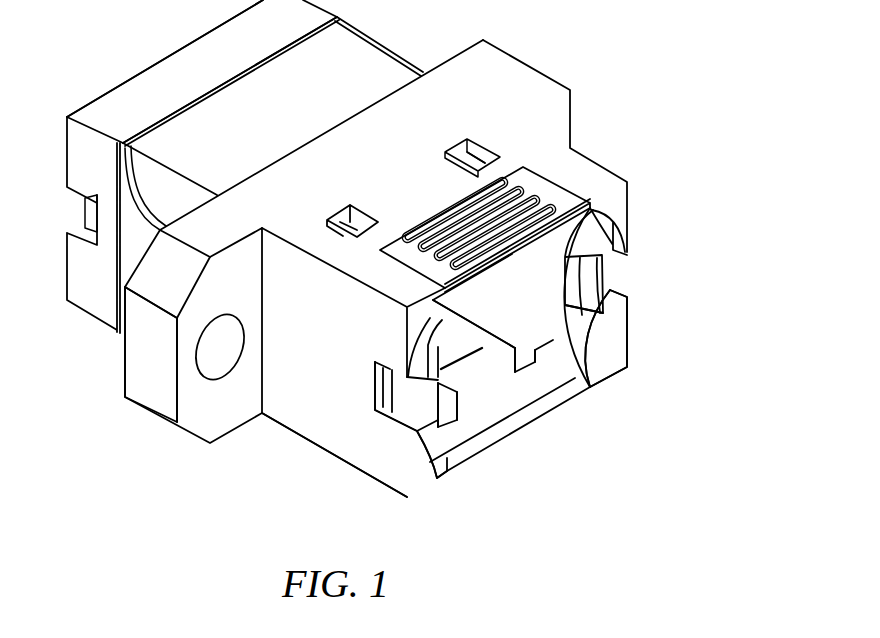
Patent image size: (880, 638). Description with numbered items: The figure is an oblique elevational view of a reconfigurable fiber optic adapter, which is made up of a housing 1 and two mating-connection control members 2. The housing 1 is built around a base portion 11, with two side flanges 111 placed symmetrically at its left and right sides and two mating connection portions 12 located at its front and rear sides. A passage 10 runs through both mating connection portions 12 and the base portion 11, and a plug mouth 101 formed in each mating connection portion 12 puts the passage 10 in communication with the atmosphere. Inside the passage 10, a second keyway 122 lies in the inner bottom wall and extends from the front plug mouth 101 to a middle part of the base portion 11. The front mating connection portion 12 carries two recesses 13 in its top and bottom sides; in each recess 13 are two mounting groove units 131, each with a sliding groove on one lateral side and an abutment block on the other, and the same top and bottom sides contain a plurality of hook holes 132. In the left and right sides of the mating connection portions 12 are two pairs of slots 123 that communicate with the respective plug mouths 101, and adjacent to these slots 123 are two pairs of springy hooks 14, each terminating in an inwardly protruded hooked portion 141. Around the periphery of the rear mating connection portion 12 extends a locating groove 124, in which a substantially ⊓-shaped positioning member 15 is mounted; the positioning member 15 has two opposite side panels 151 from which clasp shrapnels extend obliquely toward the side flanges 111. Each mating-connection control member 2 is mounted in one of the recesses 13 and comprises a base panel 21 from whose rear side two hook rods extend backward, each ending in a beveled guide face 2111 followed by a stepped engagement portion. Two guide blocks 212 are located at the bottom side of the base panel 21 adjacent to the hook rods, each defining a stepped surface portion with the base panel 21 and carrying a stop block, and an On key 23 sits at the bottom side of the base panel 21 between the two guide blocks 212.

The housing 1 is at (343, 477).
The mating-connection control member 2 is at (648, 155).
The passage 10 is at (493, 333).
The base portion 11 is at (388, 102).
The mating connection portion 12 is at (338, 442).
The recess 13 is at (576, 466).
The springy hook 14 is at (545, 268).
The positioning member 15 is at (205, 101).
The base panel 21 is at (544, 191).
The On key 23 is at (486, 378).
The plug mouth 101 is at (605, 338).
The side flange 111 is at (138, 349).
The second keyway 122 is at (461, 365).
The slot 123 is at (542, 295).
The locating groove 124 is at (258, 66).
The mounting groove unit 131 is at (538, 335).
The hook hole 132 is at (470, 146).
The hooked portion 141 is at (577, 298).
The side panel 151 is at (125, 270).
The guide block 212 is at (593, 380).
The beveled guide face 2111 is at (476, 158).